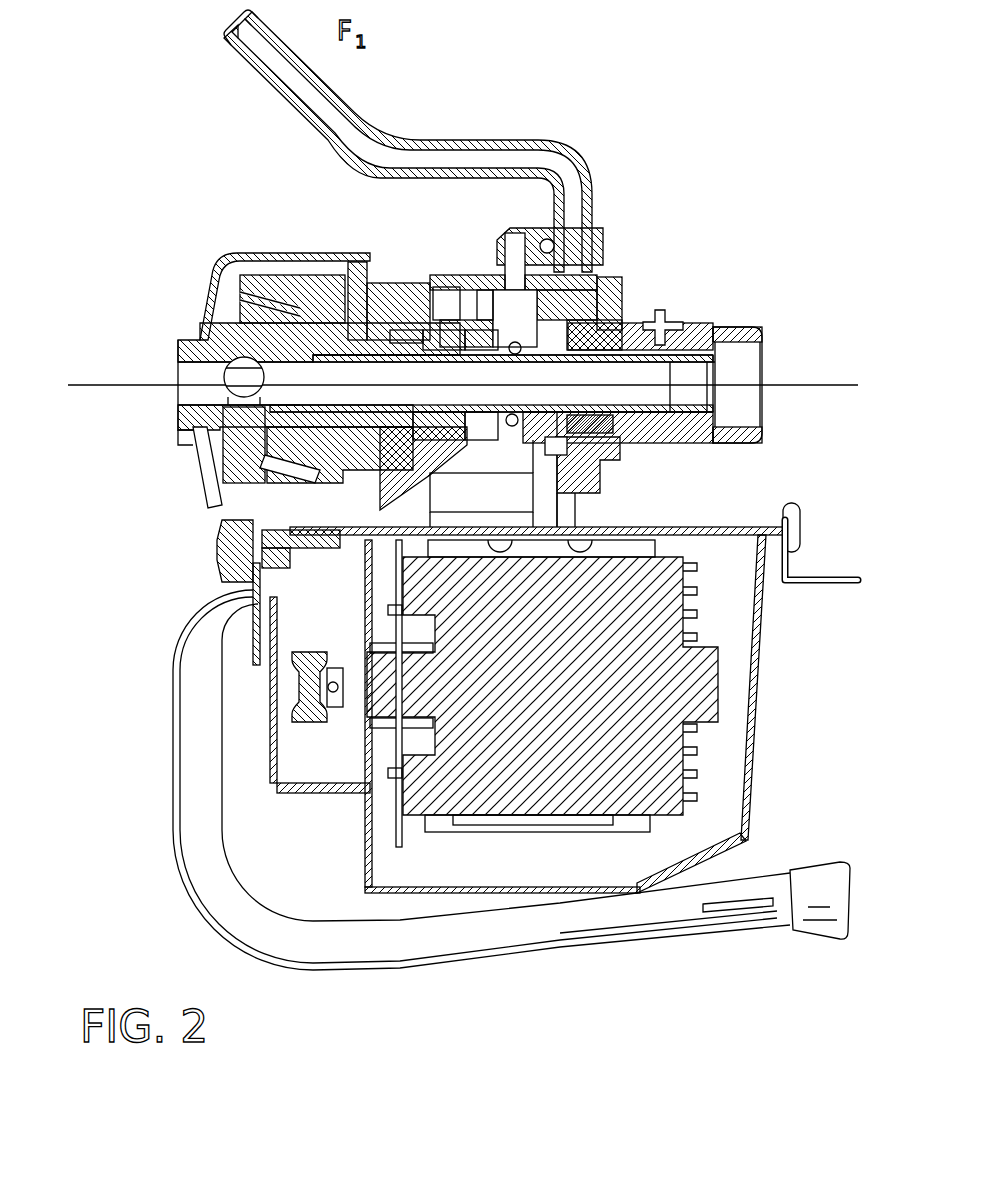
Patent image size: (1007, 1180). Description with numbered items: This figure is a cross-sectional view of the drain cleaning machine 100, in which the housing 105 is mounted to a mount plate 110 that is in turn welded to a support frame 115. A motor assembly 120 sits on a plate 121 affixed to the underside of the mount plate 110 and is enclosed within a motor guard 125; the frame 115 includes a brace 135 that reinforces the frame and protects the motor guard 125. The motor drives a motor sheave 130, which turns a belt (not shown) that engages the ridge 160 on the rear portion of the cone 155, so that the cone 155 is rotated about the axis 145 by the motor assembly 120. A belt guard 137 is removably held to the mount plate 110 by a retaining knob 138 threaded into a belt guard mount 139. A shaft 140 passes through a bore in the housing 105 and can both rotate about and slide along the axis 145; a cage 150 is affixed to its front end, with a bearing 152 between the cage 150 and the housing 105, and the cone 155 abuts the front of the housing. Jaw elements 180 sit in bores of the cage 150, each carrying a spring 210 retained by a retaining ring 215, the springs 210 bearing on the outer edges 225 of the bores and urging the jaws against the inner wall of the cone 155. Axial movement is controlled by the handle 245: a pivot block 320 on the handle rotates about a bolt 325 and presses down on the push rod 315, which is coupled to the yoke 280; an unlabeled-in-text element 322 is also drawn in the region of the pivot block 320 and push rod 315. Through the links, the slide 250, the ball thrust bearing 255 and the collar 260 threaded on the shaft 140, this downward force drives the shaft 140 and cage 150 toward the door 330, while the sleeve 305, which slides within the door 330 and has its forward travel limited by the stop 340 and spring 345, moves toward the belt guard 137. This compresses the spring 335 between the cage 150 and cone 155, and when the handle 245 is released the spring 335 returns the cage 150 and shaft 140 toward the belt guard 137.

The drain cleaning machine 100 is at (510, 66).
The housing 105 is at (383, 277).
The mount plate 110 is at (743, 527).
The support frame 115 is at (247, 947).
The motor assembly 120 is at (718, 673).
The plate 121 is at (653, 528).
The motor guard 125 is at (765, 755).
The motor sheave 130 is at (262, 720).
The brace 135 is at (748, 907).
The belt guard 137 is at (207, 313).
The retaining knob 138 is at (217, 547).
The belt guard mount 139 is at (177, 660).
The shaft 140 is at (627, 330).
The axis 145 is at (167, 384).
The cage 150 is at (177, 350).
The bearing 152 is at (400, 280).
The cone 155 is at (280, 320).
The ridge 160 is at (318, 277).
The jaw element 180 is at (220, 375).
The spring 210 is at (217, 483).
The retaining ring 215 is at (217, 503).
The outer edges 225 is at (213, 520).
The handle 245 is at (573, 158).
The slide 250 is at (390, 487).
The ball thrust bearing 255 is at (456, 477).
The collar 260 is at (533, 343).
The yoke 280 is at (597, 293).
The sleeve 305 is at (707, 327).
The push rod 315 is at (485, 263).
The pivot block 320 is at (597, 230).
The pin 322 is at (495, 247).
The bolt 325 is at (547, 195).
The door 330 is at (760, 337).
The spring 335 is at (290, 328).
The stop 340 is at (553, 480).
The spring 345 is at (613, 423).